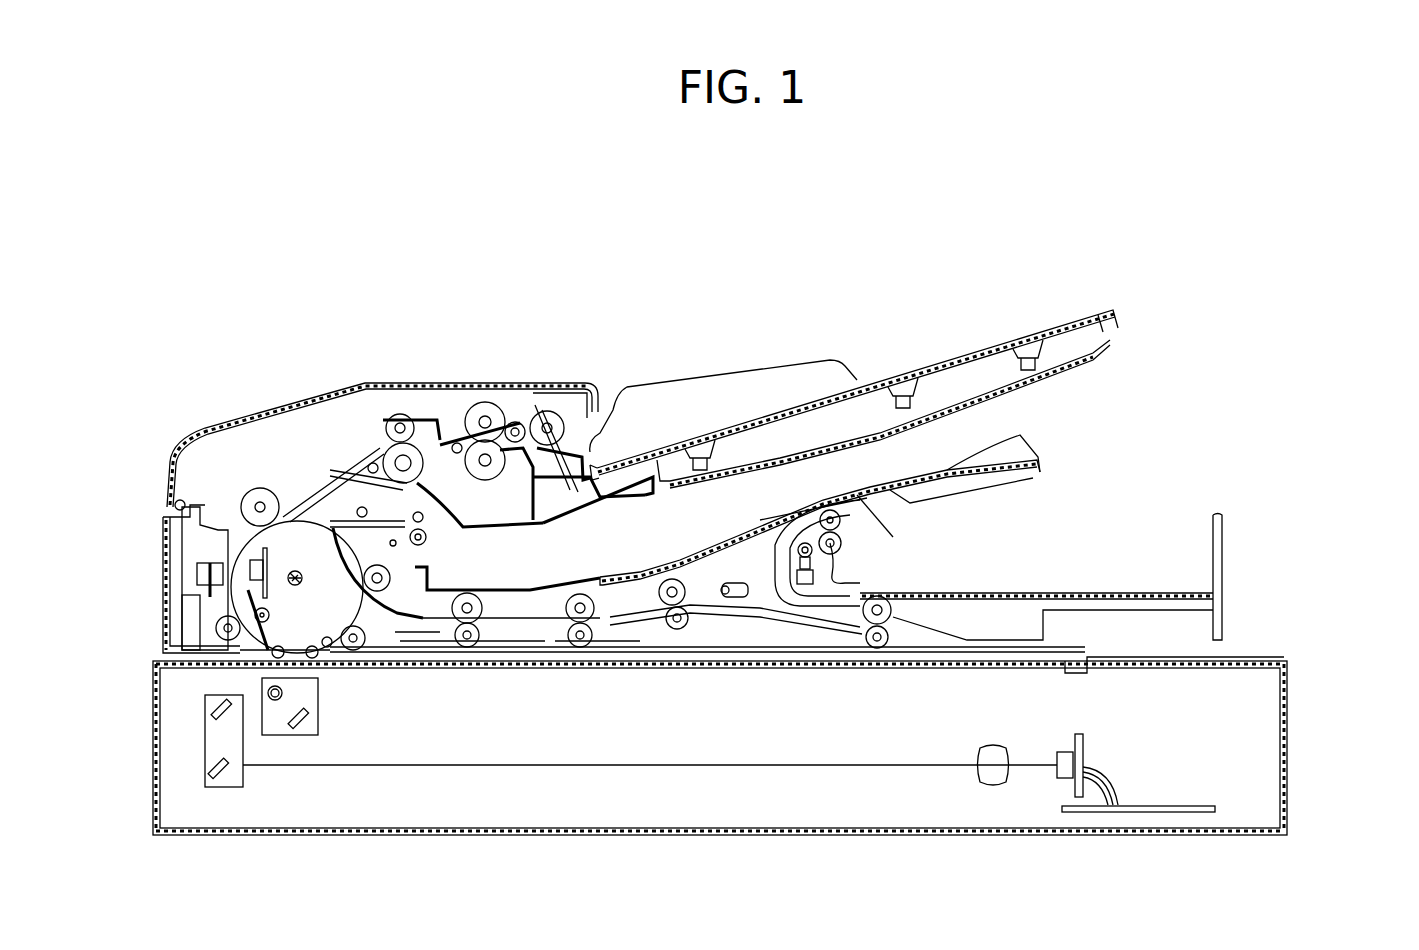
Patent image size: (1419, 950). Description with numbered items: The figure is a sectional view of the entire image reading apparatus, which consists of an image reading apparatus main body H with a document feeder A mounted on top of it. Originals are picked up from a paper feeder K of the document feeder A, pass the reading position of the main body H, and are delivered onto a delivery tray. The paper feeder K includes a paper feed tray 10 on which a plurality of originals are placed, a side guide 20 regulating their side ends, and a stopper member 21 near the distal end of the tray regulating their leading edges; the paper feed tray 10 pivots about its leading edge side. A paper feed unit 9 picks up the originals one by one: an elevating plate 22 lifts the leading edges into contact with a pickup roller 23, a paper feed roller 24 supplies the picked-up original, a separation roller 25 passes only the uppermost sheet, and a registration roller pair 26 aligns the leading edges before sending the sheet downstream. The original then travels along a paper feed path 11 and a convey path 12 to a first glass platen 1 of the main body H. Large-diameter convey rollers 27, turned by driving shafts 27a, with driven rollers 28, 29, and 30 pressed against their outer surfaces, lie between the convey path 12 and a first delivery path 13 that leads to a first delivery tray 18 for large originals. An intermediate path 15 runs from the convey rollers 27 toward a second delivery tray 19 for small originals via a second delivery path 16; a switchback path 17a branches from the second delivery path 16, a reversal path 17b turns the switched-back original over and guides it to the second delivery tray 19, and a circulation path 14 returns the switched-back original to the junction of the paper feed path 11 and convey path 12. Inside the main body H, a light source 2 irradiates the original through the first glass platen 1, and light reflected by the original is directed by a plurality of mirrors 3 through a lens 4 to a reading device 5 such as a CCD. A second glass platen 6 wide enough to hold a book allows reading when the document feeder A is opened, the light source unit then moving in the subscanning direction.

The first glass platen 1 is at (288, 667).
The light source 2 is at (262, 682).
The mirrors 3 is at (217, 762).
The lens 4 is at (993, 748).
The reading device 5 is at (1078, 735).
The second glass platen 6 is at (737, 652).
The paper feed unit 9 is at (526, 292).
The paper feed tray 10 is at (962, 352).
The paper feed path 11 is at (340, 381).
The convey path 12 is at (227, 597).
The first delivery path 13 is at (435, 547).
The circulation path 14 is at (322, 527).
The intermediate path 15 is at (617, 628).
The second delivery path 16 is at (780, 560).
The switchback path 17a is at (848, 630).
The reversal path 17b is at (820, 584).
The first delivery tray 18 is at (666, 562).
The second delivery tray 19 is at (1020, 590).
The side guide 20 is at (740, 372).
The stopper member 21 is at (531, 492).
The elevating plate 22 is at (558, 487).
The pickup roller 23 is at (606, 392).
The paper feed roller 24 is at (492, 402).
The separation roller 25 is at (468, 472).
The registration roller pair 26 is at (400, 413).
The convey rollers 27 is at (283, 510).
The driving shafts 27a is at (296, 588).
The driven roller 28 is at (253, 500).
The driven roller 29 is at (216, 627).
The driven roller 30 is at (373, 645).
The document feeder A is at (1225, 418).
The image reading apparatus main body H is at (1312, 698).
The paper feeder K is at (822, 290).